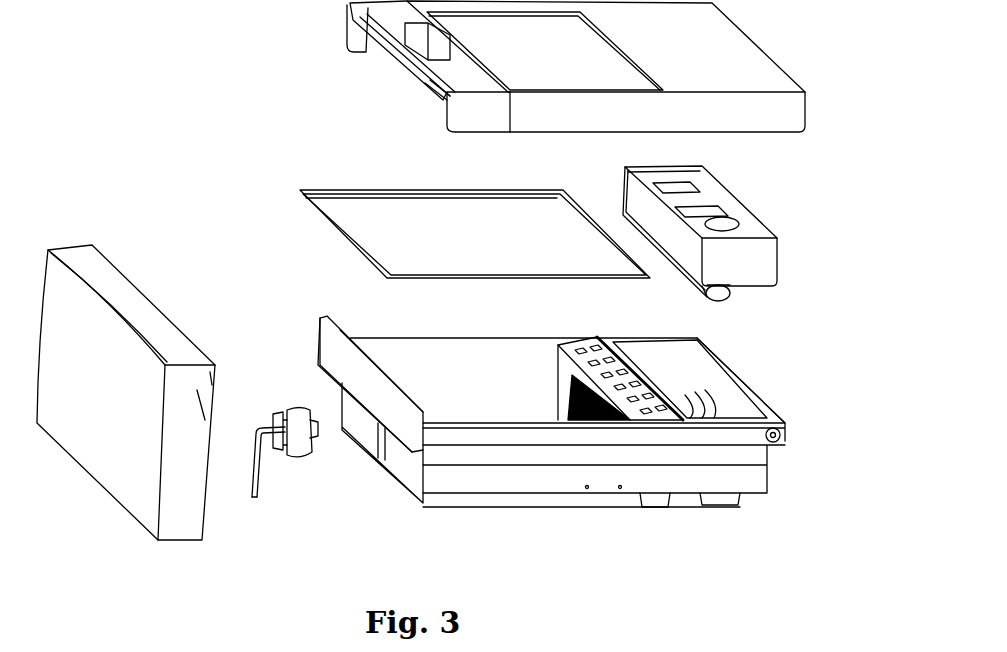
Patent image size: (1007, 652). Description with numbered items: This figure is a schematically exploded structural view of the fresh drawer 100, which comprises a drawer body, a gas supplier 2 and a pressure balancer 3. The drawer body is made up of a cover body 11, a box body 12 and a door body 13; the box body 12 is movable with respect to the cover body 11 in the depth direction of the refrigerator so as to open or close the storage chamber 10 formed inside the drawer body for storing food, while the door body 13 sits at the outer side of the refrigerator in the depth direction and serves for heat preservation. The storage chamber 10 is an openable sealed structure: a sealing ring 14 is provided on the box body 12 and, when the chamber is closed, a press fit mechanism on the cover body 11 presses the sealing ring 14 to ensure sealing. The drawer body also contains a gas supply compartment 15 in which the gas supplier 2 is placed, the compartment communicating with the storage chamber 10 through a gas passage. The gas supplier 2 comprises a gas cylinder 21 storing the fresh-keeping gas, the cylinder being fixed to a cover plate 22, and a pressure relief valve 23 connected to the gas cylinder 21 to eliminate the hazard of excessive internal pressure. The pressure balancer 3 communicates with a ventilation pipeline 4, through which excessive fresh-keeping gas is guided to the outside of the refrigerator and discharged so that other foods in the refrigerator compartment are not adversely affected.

The fresh drawer 100 is at (72, 104).
The gas supplier 2 is at (808, 230).
The pressure balancer 3 is at (293, 406).
The ventilation pipeline 4 is at (254, 443).
The storage chamber 10 is at (447, 338).
The cover body 11 is at (576, 66).
The box body 12 is at (753, 392).
The door body 13 is at (92, 245).
The sealing ring 14 is at (432, 190).
The gas supply compartment 15 is at (657, 338).
The gas cylinder 21 is at (675, 275).
The cover plate 22 is at (700, 234).
The pressure relief valve 23 is at (741, 221).